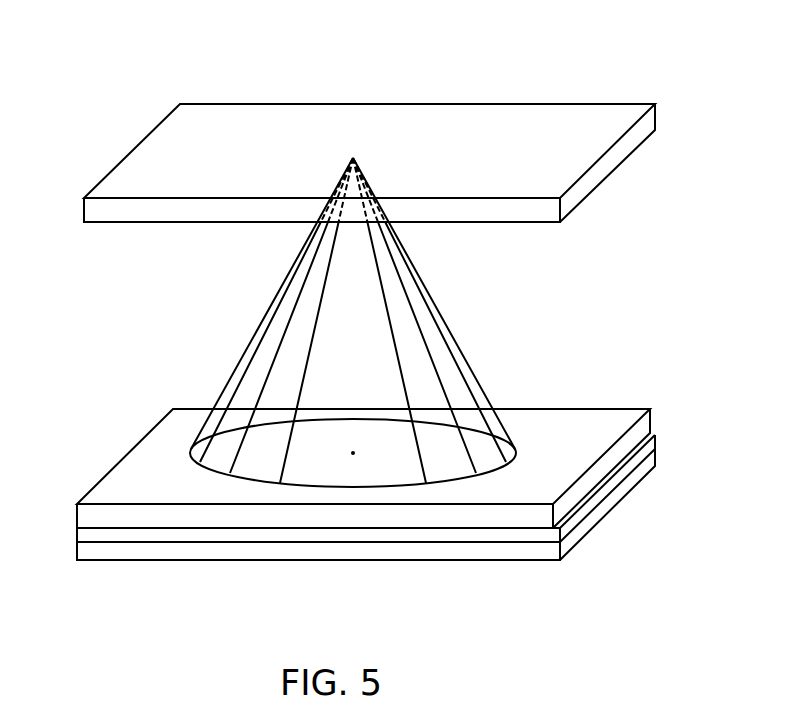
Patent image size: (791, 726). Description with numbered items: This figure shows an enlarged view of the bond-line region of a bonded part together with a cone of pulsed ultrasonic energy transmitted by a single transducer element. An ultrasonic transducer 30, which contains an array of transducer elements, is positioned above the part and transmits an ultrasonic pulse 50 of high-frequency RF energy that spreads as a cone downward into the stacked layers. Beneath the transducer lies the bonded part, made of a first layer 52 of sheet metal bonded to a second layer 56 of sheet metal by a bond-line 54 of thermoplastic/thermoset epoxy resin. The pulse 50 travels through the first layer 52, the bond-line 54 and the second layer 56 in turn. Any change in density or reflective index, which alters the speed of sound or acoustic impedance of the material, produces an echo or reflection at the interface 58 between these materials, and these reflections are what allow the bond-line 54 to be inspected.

The ultrasonic transducer 30 is at (295, 125).
The ultrasonic pulse 50 is at (238, 410).
The first layer 52 is at (155, 447).
The bond-line 54 is at (133, 537).
The second layer 56 is at (95, 551).
The interface 58 is at (488, 528).